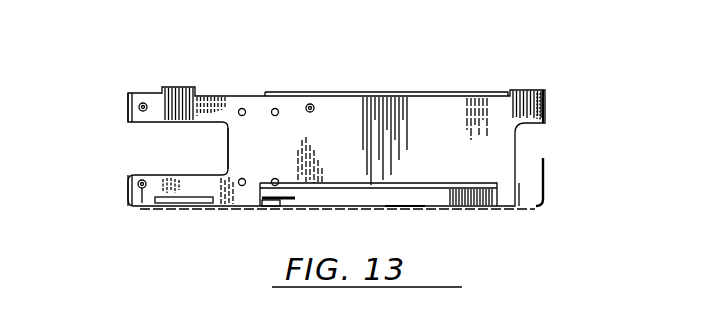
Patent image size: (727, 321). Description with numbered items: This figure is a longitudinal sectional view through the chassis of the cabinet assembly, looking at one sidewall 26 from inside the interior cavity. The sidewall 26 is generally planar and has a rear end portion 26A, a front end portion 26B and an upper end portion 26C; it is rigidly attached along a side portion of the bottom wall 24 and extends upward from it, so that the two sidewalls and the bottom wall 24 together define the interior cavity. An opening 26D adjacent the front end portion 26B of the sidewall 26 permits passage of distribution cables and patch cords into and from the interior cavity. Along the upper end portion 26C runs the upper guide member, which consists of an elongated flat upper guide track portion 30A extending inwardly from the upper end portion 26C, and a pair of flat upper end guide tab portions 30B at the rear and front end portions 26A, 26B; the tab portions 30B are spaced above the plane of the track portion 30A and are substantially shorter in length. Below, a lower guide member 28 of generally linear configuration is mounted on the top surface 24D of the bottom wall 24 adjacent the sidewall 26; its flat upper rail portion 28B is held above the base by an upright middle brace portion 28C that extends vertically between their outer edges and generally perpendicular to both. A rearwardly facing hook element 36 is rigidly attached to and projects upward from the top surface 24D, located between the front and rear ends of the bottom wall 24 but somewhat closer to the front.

The bottom wall 24 is at (233, 210).
The top surface 24D is at (413, 207).
The sidewall 26 is at (495, 140).
The rear end portion 26A is at (548, 100).
The front end portion 26B is at (128, 102).
The upper end portion 26C is at (332, 92).
The opening 26D is at (164, 142).
The lower guide member 28 is at (440, 205).
The upper rail portion 28B is at (380, 185).
The upright middle brace portion 28C is at (320, 195).
The upper guide track portion 30A is at (355, 95).
The upper end guide tab portion 30B is at (173, 85).
The hook element 36 is at (280, 197).